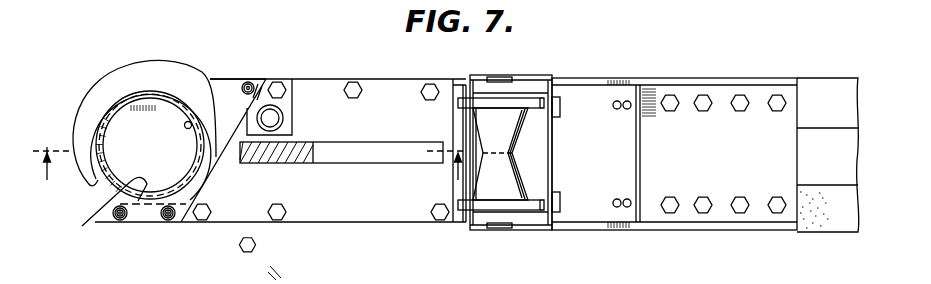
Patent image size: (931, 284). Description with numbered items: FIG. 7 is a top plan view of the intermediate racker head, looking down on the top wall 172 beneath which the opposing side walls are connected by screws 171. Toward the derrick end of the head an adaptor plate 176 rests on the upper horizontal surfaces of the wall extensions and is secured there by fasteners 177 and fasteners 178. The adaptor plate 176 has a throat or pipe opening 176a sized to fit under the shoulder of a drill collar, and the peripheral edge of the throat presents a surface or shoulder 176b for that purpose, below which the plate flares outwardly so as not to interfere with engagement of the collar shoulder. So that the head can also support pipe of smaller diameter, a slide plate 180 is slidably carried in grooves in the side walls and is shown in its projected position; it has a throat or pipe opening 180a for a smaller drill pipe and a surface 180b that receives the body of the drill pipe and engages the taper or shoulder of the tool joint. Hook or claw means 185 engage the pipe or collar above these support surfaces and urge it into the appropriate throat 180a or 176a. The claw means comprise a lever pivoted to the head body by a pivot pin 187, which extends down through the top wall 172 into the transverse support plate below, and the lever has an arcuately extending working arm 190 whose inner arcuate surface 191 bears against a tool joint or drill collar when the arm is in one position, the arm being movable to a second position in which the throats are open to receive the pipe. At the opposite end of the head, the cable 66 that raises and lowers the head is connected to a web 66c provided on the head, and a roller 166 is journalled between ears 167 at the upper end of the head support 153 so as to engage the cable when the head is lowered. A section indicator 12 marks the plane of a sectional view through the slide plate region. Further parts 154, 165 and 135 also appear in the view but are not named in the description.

The hook or claw means 185 is at (162, 36).
The working arm 190 is at (98, 99).
The inner arcuate surface 191 is at (100, 129).
The slide plate 180 is at (187, 183).
The throat or pipe opening 180a is at (183, 128).
The throat or pipe opening 176a is at (193, 171).
The surface or shoulder 176b is at (191, 122).
The fasteners 178 is at (260, 84).
The top wall 172 is at (348, 218).
The screws 171 is at (355, 83).
The pivot pin 187 is at (278, 121).
The web 66c is at (366, 150).
The section line 12- 12 is at (248, 184).
The surface 180b is at (99, 217).
The fasteners 177 is at (120, 220).
The adaptor plate 176 is at (152, 219).
The slide 154 is at (438, 221).
The ears 167 is at (527, 88).
The roller 166 is at (514, 174).
The head support 153 is at (528, 235).
The mounting plate 165 is at (710, 244).
The frame member 135 is at (845, 220).
The cable 66 is at (284, 276).